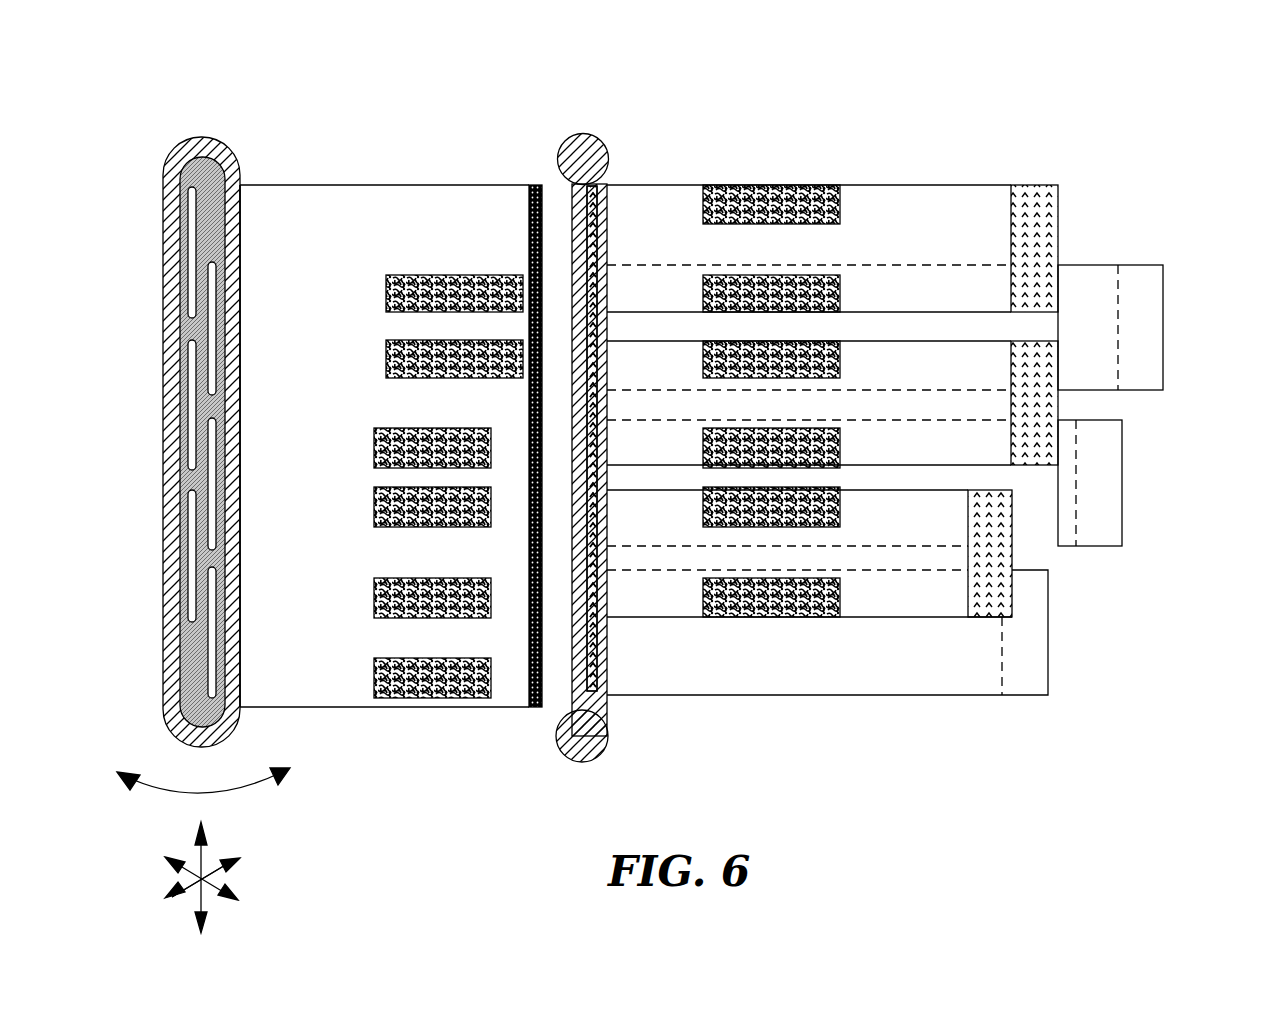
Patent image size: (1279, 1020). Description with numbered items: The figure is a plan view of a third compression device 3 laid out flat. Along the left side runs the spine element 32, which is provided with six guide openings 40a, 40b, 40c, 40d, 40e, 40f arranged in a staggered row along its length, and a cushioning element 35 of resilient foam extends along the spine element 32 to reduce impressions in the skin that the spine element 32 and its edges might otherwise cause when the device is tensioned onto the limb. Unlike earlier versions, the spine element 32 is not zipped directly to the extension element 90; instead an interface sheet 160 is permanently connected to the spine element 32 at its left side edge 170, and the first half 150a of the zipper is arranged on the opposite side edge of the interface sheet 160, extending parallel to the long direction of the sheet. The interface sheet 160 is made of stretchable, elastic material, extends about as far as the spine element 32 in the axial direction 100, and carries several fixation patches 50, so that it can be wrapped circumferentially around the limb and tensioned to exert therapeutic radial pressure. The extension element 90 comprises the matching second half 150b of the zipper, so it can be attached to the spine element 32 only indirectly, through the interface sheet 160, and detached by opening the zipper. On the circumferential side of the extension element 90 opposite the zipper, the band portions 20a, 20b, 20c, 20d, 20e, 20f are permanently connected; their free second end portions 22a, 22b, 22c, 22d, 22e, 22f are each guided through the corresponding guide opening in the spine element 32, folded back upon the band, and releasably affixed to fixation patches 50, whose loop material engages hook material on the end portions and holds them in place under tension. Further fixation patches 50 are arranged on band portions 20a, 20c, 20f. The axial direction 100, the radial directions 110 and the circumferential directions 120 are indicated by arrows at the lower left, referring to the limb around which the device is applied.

The third compression device 3 is at (358, 62).
The spine element 32 is at (203, 160).
The cushioning element 35 is at (211, 150).
The first guide opening 40a is at (192, 238).
The guide opening 40b is at (212, 332).
The guide opening 40c is at (192, 388).
The guide opening 40d is at (212, 484).
The guide opening 40e is at (192, 553).
The guide opening 40f is at (212, 650).
The fixation patches 50 is at (410, 358).
The extension element 90 is at (586, 134).
The axial directions 100 is at (200, 855).
The radial directions 110 is at (212, 878).
The circumferential directions 120 is at (243, 793).
The first half of the zipper 150a is at (540, 672).
The second half of the zipper 150b is at (580, 208).
The interface sheet 160 is at (318, 666).
The left side edge 170 is at (242, 203).
The band portion 20a is at (876, 215).
The band portion 20b is at (973, 325).
The band portion 20c is at (957, 404).
The band portion 20d is at (980, 480).
The band portion 20e is at (926, 557).
The band portion 20f is at (845, 668).
The second end portion 22a is at (992, 212).
The second end portion 22b is at (1097, 300).
The second end portion 22c is at (1034, 403).
The second end portion 22d is at (1062, 465).
The second end portion 22e is at (990, 553).
The second end portion 22f is at (975, 680).